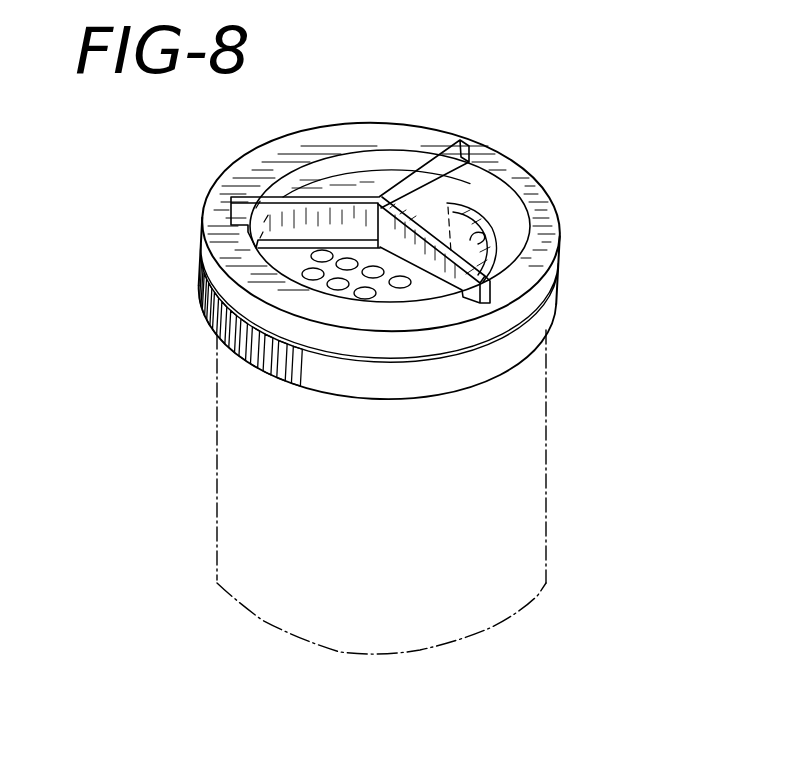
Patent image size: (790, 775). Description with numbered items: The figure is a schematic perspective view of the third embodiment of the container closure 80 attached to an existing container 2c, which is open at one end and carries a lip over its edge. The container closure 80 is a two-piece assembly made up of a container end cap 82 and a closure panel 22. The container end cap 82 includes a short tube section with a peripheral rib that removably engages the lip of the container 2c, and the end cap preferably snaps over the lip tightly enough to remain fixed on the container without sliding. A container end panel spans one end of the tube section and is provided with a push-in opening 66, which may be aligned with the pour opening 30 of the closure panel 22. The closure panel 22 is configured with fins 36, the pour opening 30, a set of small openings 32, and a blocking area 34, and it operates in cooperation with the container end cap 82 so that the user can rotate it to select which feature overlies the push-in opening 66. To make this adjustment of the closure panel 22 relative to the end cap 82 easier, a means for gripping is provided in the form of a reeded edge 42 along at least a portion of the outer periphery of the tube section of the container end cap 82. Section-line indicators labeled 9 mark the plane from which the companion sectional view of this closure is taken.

The container closure 80 is at (196, 166).
The closure panel 22 is at (542, 218).
The blocking area 34 is at (345, 176).
The fins 36 is at (452, 194).
The pour opening 30 is at (483, 233).
The small openings 32 is at (345, 290).
The container end cap 82 is at (560, 307).
The reeded edge 42 is at (201, 290).
The push-in opening 66 is at (535, 174).
The section line 9- 9 is at (520, 79).
The container 2c is at (546, 478).